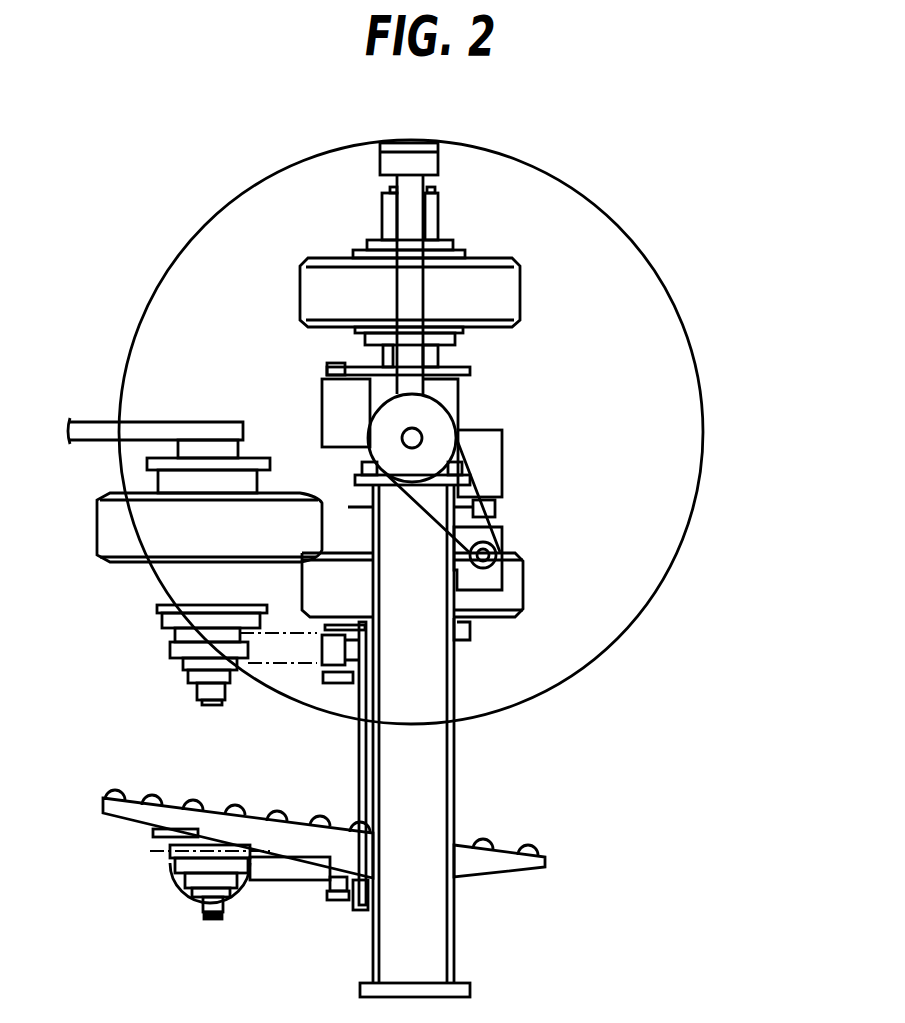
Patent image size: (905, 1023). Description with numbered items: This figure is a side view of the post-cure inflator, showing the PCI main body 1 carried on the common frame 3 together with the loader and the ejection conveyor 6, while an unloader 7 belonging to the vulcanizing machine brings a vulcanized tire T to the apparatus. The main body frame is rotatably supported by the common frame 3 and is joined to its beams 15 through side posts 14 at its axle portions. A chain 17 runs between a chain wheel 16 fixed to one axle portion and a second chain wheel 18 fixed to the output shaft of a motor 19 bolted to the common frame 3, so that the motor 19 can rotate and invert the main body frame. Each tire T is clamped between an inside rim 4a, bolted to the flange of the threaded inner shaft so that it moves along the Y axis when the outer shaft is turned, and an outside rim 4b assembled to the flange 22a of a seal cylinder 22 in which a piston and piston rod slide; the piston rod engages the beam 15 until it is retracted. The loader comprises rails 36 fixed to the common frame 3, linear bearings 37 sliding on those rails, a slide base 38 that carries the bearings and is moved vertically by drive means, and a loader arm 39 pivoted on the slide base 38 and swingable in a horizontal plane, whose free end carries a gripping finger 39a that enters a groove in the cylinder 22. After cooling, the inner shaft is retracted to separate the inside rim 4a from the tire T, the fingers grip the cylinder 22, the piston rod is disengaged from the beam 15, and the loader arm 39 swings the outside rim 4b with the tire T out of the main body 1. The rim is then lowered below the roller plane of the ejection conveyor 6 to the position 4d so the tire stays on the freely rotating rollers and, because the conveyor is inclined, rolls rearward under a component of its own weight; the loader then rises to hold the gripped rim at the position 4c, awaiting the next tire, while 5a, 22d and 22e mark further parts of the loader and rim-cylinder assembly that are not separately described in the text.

The PCI main body 1 is at (598, 205).
The common frame 3 is at (455, 933).
The inside rim 4a is at (465, 328).
The outside rim 4b is at (465, 628).
The raised rim position 4c is at (157, 613).
The lowered rim position 4d is at (157, 833).
The tire holding head 5a is at (170, 648).
The ejection conveyor 6 is at (103, 798).
The unloader 7 is at (107, 427).
The side post 14 is at (402, 212).
The beam 15 is at (397, 158).
The chain wheel 16 is at (440, 455).
The chain 17 is at (493, 517).
The chain wheel 18 is at (500, 553).
The motor 19 is at (495, 580).
The seal cylinder 22 is at (440, 208).
The flange 22a is at (452, 248).
The slide bracket 22d is at (183, 635).
The slide bracket 22e is at (197, 855).
The rail 36 is at (368, 912).
The linear bearing 37 is at (330, 903).
The slide base 38 is at (277, 880).
The loader arm 39 is at (236, 892).
The gripping finger 39a is at (182, 895).
The vulcanized tire T is at (518, 290).